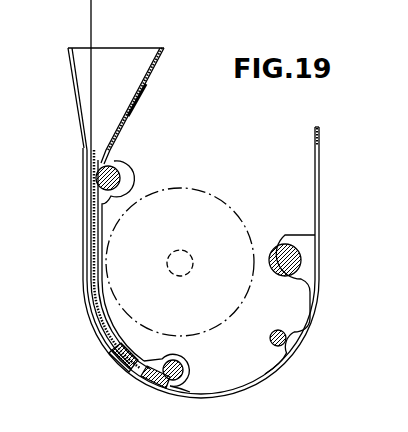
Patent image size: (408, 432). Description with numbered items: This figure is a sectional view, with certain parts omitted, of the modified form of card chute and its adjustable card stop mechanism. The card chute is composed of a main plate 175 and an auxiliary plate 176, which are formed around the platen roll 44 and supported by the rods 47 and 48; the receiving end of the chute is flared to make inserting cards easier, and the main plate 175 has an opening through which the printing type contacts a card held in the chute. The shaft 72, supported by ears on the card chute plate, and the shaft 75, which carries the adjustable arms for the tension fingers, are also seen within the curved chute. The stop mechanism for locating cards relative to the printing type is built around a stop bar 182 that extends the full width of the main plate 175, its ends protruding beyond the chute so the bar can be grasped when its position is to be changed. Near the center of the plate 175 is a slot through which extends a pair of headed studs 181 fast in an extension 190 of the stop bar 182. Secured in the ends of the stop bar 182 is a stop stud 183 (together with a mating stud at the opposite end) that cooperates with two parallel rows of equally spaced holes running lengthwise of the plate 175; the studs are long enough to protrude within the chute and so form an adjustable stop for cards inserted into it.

The main plate 175 is at (320, 165).
The auxiliary plate 176 is at (150, 78).
The stop bar 182 is at (98, 338).
The rod 47 is at (120, 169).
The platen roll 44 is at (203, 190).
The rod 48 is at (283, 247).
The shaft 72 is at (272, 336).
The shaft 75 is at (187, 365).
The stop stud 183 is at (108, 340).
The headed stud 181 is at (152, 382).
The extension of stop bar 190 is at (134, 379).